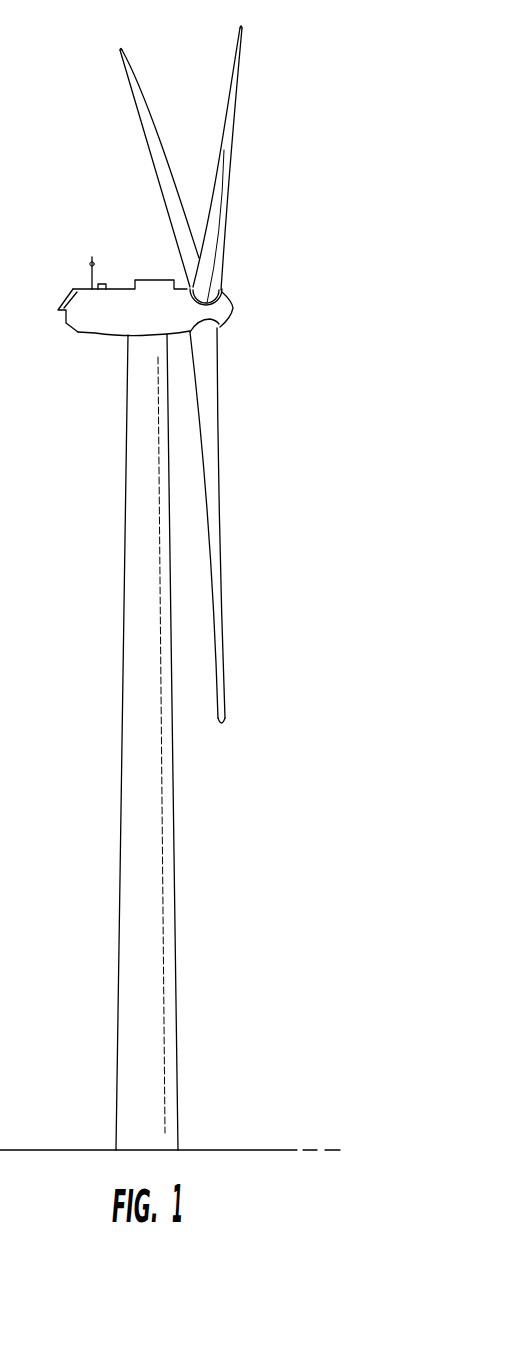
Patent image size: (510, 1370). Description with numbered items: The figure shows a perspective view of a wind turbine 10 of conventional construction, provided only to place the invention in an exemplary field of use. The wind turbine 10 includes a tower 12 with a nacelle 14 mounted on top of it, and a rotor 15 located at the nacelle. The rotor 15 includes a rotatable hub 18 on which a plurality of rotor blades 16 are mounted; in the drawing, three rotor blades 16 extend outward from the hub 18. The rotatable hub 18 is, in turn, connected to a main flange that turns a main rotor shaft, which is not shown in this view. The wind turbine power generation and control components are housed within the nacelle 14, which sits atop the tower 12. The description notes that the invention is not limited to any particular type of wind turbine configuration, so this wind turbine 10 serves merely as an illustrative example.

The wind turbine 10 is at (370, 135).
The tower 12 is at (150, 867).
The nacelle 14 is at (97, 327).
The rotor 15 is at (232, 279).
The rotor blades 16 is at (153, 145).
The rotatable hub 18 is at (233, 309).